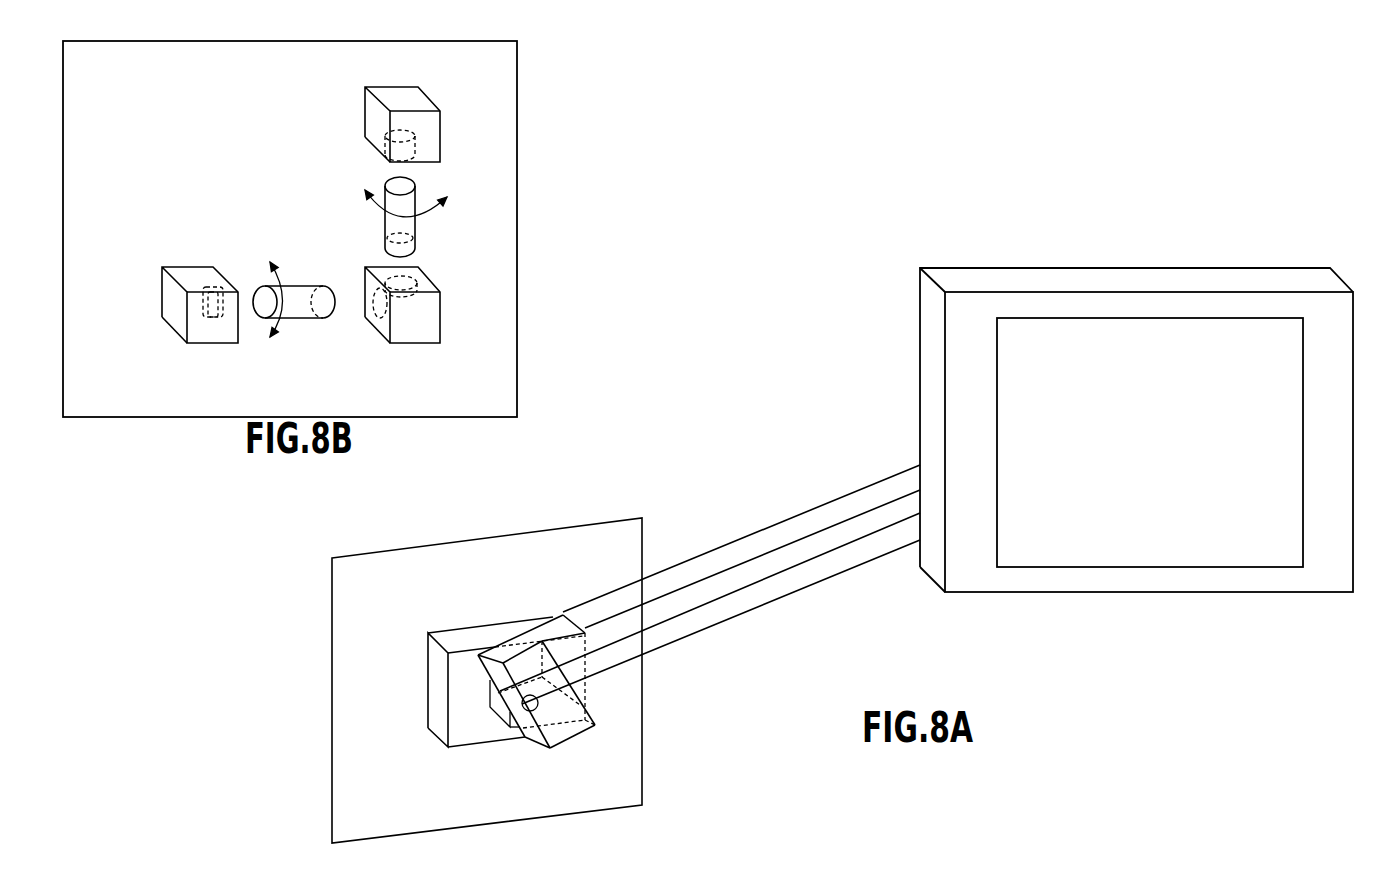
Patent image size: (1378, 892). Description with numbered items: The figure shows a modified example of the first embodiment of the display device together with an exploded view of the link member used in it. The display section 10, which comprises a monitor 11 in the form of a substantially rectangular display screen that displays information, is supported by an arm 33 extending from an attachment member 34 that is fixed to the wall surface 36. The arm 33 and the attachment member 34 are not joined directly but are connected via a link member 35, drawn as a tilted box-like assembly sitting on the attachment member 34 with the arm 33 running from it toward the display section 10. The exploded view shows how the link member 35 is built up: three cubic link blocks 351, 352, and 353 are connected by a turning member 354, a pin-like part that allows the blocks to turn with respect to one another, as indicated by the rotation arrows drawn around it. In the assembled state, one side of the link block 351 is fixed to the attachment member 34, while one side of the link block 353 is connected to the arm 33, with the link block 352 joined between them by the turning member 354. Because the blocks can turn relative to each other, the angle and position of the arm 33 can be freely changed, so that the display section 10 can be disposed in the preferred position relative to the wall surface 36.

In FIG. 8A, the display section 10 is at (1047, 267).
In FIG. 8A, the monitor 11 is at (1193, 567).
In FIG. 8A, the arm 33 is at (842, 571).
In FIG. 8A, the attachment member 34 is at (460, 747).
In FIG. 8A, the link member 35 is at (565, 740).
In FIG. 8A, the wall surface 36 is at (487, 680).
In FIG. 8B, the link block 351 is at (170, 332).
In FIG. 8B, the link block 352 is at (377, 333).
In FIG. 8B, the link block 353 is at (362, 112).
In FIG. 8B, the turning member 354 is at (383, 222).